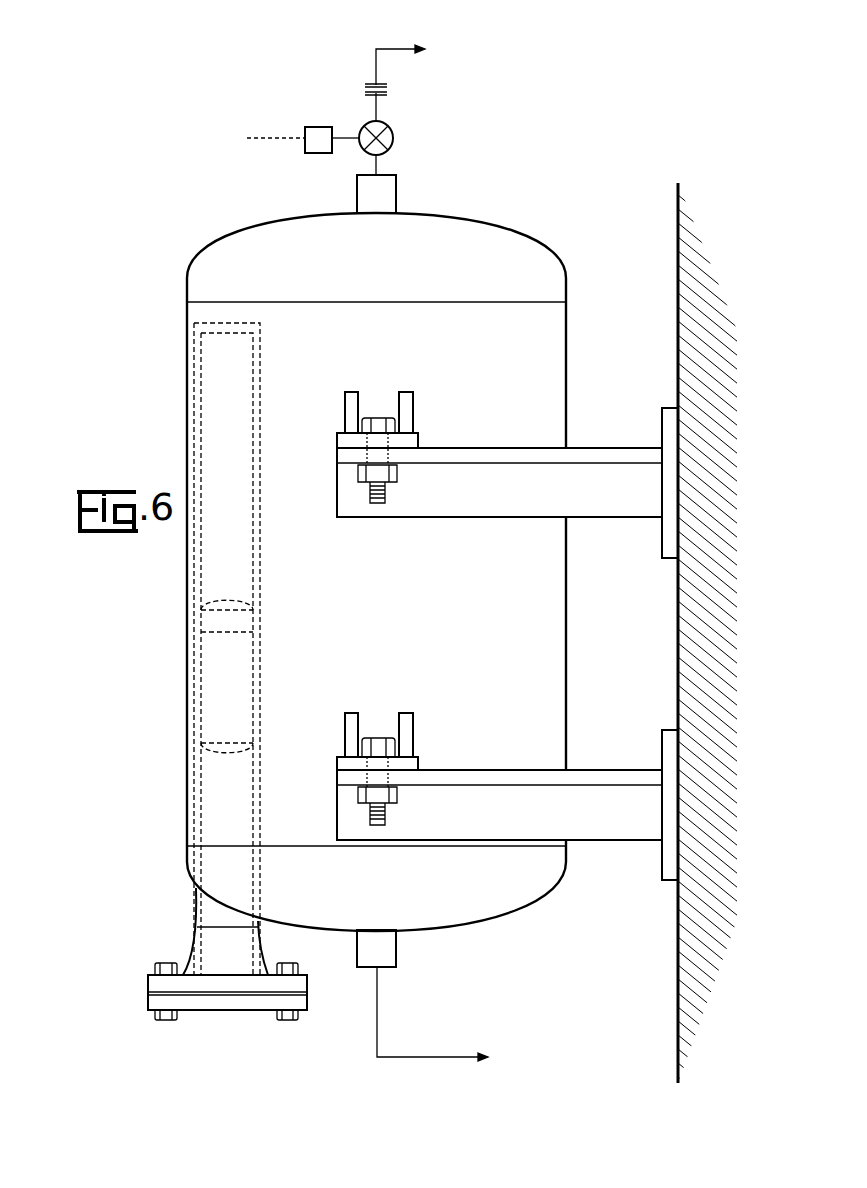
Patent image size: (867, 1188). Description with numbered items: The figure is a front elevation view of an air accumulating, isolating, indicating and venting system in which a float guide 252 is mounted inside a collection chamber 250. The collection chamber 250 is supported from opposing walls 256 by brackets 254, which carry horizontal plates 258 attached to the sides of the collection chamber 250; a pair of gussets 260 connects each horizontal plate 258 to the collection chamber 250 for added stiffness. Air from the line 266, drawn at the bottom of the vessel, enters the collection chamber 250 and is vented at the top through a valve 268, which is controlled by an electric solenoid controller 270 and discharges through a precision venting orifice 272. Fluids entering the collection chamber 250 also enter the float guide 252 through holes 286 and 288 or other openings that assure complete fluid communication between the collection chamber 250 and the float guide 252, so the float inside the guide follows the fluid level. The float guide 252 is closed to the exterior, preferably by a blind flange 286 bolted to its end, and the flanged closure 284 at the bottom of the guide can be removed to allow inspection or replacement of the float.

The collection chamber 250 is at (552, 383).
The float guide 252 is at (198, 913).
The brackets 254 is at (338, 492).
The opposing walls 256 is at (678, 593).
The horizontal plates 258 is at (338, 440).
The gussets 260 is at (345, 400).
The line 266 is at (443, 1059).
The valve 268 is at (393, 133).
The electric solenoid controller 270 is at (306, 126).
The precision venting orifice 272 is at (388, 84).
The flange 284 is at (307, 1000).
The blind flange 286 is at (230, 325).
The holes 288 is at (258, 812).